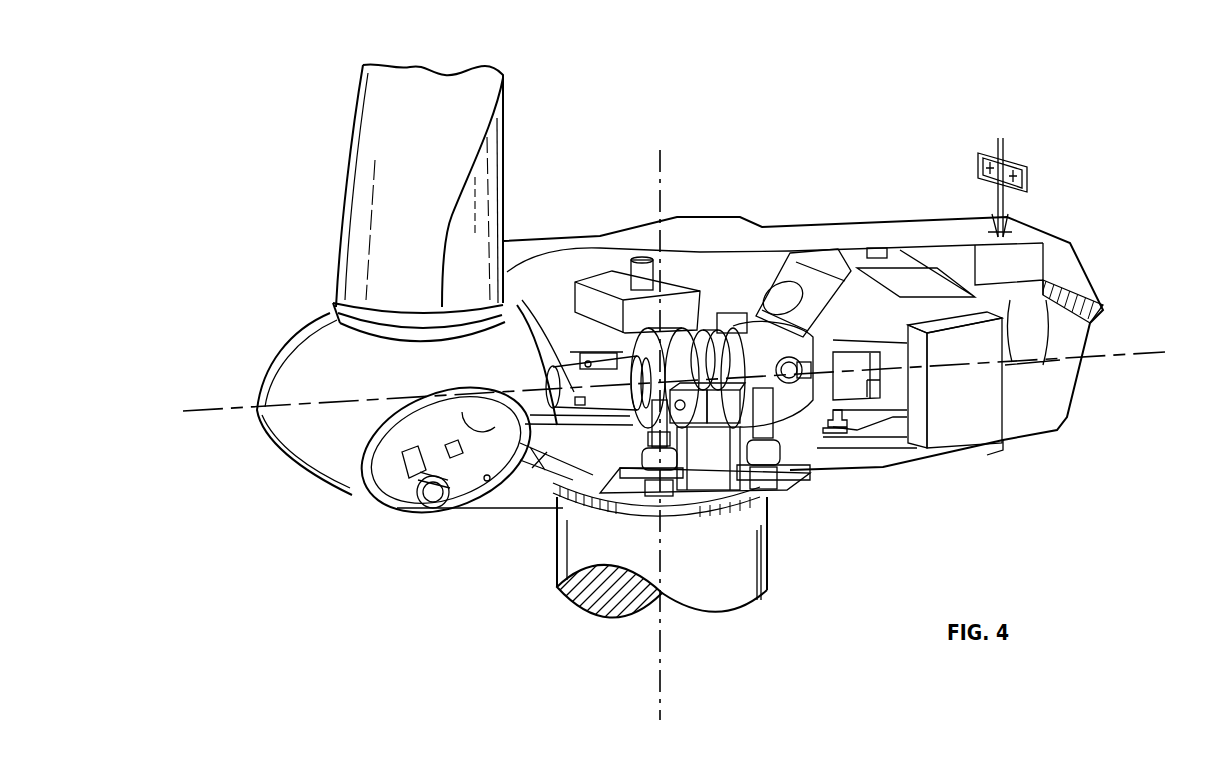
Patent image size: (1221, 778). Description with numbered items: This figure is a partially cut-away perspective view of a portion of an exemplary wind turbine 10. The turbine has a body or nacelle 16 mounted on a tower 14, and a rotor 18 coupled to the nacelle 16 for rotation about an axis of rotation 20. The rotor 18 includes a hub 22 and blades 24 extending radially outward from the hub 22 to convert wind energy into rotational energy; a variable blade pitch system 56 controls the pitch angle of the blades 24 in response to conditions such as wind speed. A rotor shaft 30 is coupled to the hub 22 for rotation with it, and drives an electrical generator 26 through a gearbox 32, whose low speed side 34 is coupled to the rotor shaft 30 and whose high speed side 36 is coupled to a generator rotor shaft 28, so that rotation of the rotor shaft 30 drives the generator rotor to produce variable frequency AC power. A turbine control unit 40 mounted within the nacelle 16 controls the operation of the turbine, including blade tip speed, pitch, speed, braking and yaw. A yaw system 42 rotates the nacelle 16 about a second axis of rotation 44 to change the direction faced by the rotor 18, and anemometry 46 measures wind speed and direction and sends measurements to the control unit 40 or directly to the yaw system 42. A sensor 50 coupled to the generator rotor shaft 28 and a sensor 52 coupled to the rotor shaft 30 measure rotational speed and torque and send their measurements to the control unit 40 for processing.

The wind turbine 10 is at (1117, 180).
The tower 14 is at (718, 588).
The body (nacelle) 16 is at (523, 245).
The rotor 18 is at (243, 305).
The axis of rotation 20 is at (213, 410).
The hub 22 is at (338, 427).
The blade 24 is at (367, 183).
The electrical generator 26 is at (850, 393).
The generator rotor shaft 28 is at (794, 390).
The rotor shaft 30 is at (578, 383).
The gearbox 32 is at (712, 328).
The low speed side 34 is at (651, 338).
The high speed side 36 is at (753, 345).
The turbine control unit (TCU) 40 is at (953, 393).
The yaw system 42 is at (608, 510).
The axis of rotation (yaw axis) 44 is at (660, 150).
The anemometry 46 is at (1027, 165).
The sensor 50 is at (813, 480).
The sensor 52 is at (580, 403).
The variable blade pitch system 56 is at (410, 507).